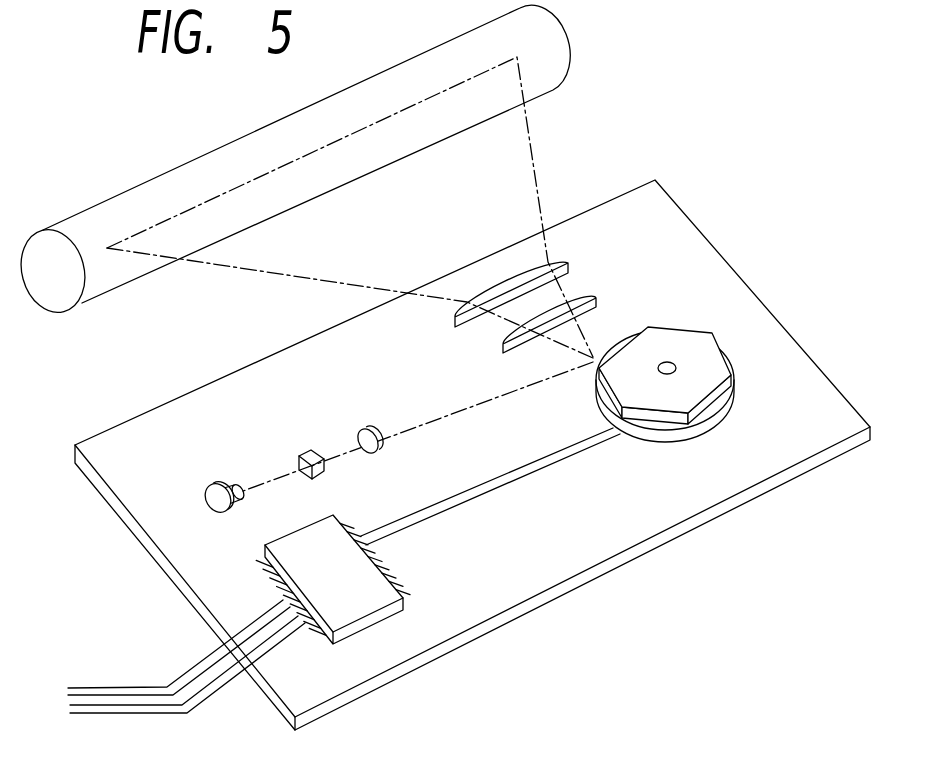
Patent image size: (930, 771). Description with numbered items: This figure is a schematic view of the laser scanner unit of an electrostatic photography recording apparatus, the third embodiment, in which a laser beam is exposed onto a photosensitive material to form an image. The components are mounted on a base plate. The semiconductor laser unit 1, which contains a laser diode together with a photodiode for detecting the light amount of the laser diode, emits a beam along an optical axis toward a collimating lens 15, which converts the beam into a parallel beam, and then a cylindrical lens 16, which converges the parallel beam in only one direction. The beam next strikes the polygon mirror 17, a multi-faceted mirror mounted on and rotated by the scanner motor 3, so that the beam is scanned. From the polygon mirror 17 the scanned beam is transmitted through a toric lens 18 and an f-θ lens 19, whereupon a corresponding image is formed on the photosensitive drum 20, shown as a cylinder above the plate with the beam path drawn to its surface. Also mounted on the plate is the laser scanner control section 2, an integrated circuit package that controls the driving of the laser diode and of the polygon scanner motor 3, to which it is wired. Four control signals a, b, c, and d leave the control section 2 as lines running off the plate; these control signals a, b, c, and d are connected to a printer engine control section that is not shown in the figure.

The semiconductor laser unit 1 is at (215, 485).
The laser scanner control section 2 is at (378, 620).
The scanner motor 3 is at (643, 436).
The collimating lens 15 is at (309, 452).
The cylindrical lens 16 is at (368, 428).
The polygon mirror 17 is at (725, 345).
The toric lens 18 is at (595, 297).
The f-θ lens 19 is at (571, 261).
The photo sensitive drum 20 is at (92, 207).
The control signal a is at (70, 688).
The control signal b is at (68, 693).
The control signal c is at (68, 707).
The control signal d is at (72, 715).